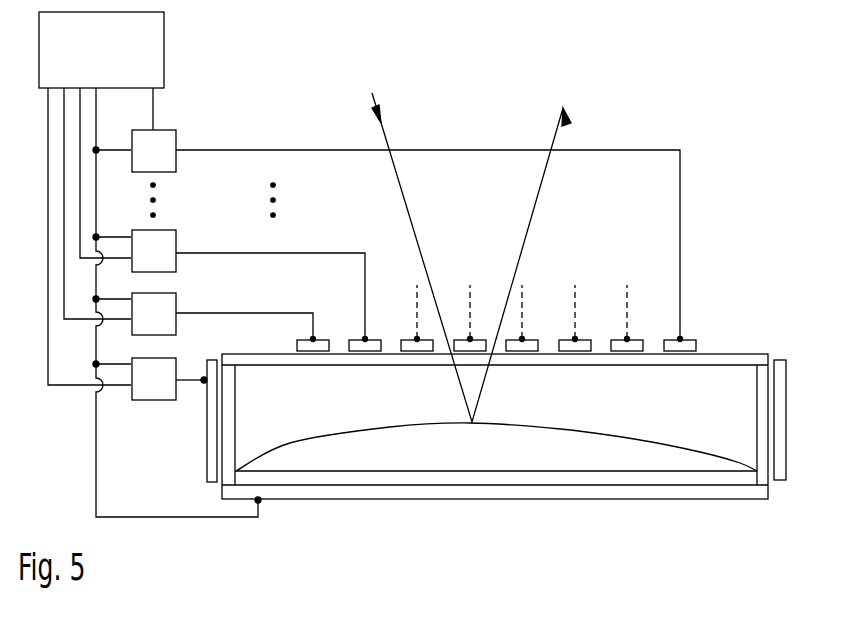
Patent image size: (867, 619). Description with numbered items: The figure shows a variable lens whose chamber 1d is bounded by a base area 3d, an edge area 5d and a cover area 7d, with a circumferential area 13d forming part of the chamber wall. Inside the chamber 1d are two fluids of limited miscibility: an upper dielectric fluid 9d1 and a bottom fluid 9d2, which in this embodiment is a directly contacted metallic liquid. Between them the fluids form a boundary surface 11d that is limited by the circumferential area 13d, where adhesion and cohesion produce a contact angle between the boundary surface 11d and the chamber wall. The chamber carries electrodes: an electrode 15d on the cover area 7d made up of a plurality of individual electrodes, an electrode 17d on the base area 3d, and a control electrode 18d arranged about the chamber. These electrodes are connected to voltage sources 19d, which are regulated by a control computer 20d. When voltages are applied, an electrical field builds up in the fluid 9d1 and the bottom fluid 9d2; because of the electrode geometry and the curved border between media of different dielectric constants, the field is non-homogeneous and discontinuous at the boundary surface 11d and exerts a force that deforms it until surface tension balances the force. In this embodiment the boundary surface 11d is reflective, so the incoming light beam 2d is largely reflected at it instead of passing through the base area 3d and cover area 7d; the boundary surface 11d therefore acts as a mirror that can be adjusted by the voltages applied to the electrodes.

The chamber 1d is at (379, 522).
The incoming light beam 2d is at (557, 138).
The base area 3d is at (587, 478).
The edge area 5d is at (230, 413).
The cover area 7d is at (760, 362).
The dielectric fluid 9d1 is at (285, 410).
The bottom fluid 9d2 is at (512, 461).
The boundary surface 11d is at (643, 441).
The circumferential area 13d is at (758, 470).
The electrode 15d is at (622, 340).
The electrode 17d is at (293, 490).
The control electrode 18d is at (212, 453).
The voltage sources 19d is at (170, 166).
The control computer 20d is at (122, 64).